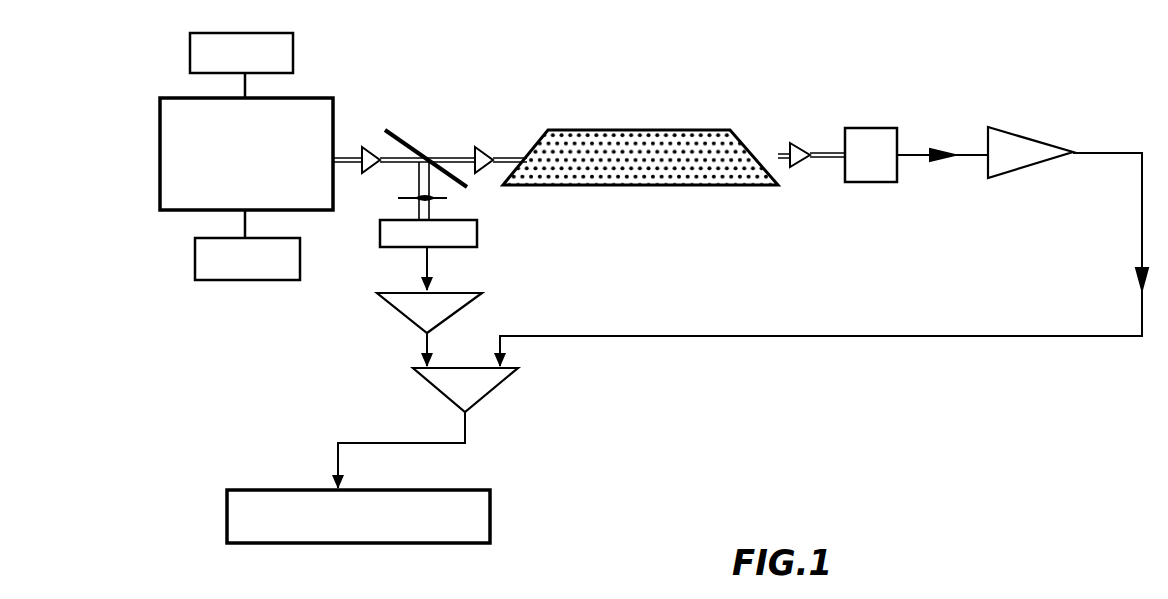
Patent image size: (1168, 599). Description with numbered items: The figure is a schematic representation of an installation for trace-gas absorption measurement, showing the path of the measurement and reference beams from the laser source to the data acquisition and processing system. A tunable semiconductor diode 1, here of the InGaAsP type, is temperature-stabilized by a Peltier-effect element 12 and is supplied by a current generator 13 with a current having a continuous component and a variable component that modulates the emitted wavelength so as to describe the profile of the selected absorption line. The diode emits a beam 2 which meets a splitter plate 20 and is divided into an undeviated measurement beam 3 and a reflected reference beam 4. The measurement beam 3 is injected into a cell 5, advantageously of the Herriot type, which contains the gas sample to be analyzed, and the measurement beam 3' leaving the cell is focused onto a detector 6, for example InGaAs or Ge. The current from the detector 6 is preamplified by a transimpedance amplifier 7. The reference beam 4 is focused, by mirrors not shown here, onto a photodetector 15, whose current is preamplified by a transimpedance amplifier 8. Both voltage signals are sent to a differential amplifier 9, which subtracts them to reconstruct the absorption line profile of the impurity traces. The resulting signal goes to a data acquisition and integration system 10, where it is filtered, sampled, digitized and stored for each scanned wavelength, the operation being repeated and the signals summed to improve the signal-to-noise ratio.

The tunable semiconductor diode 1 is at (339, 112).
The Peltier-effect element 12 is at (184, 55).
The current generator 13 is at (184, 254).
The beam 2 is at (366, 173).
The measurement beam 3 is at (482, 105).
The splitter plate 20 is at (413, 134).
The reference beam 4 is at (446, 203).
The photodetector 15 is at (483, 233).
The cell 5 is at (615, 194).
The measurement beam 3' is at (830, 101).
The detector 6 is at (861, 189).
The transimpedance amplifier 7 is at (1011, 182).
The transimpedance amplifier 8 is at (398, 323).
The differential amplifier 9 is at (495, 395).
The data acquisition and integration system 10 is at (495, 511).